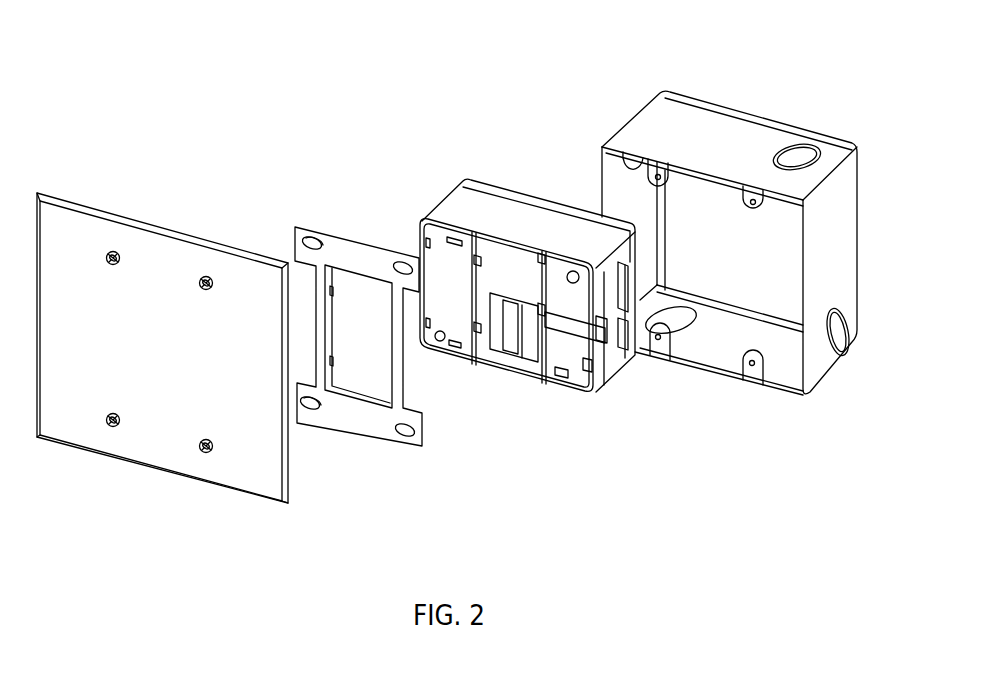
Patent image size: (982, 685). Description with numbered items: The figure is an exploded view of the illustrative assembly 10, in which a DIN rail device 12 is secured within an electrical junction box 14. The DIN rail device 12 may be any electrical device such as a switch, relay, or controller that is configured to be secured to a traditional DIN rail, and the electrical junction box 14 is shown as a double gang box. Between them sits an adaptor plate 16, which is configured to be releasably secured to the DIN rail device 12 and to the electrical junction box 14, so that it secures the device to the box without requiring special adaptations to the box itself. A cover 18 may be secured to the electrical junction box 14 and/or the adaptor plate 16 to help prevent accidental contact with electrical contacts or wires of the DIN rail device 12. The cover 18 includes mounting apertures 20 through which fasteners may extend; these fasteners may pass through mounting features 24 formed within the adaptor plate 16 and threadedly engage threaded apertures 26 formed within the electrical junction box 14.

The assembly 10 is at (793, 58).
The DIN rail device 12 is at (495, 193).
The electrical junction box 14 is at (683, 105).
The adaptor plate 16 is at (357, 249).
The cover 18 is at (146, 222).
The mounting apertures 20 is at (108, 264).
The mounting features 24 is at (313, 237).
The threaded apertures 26 is at (661, 182).